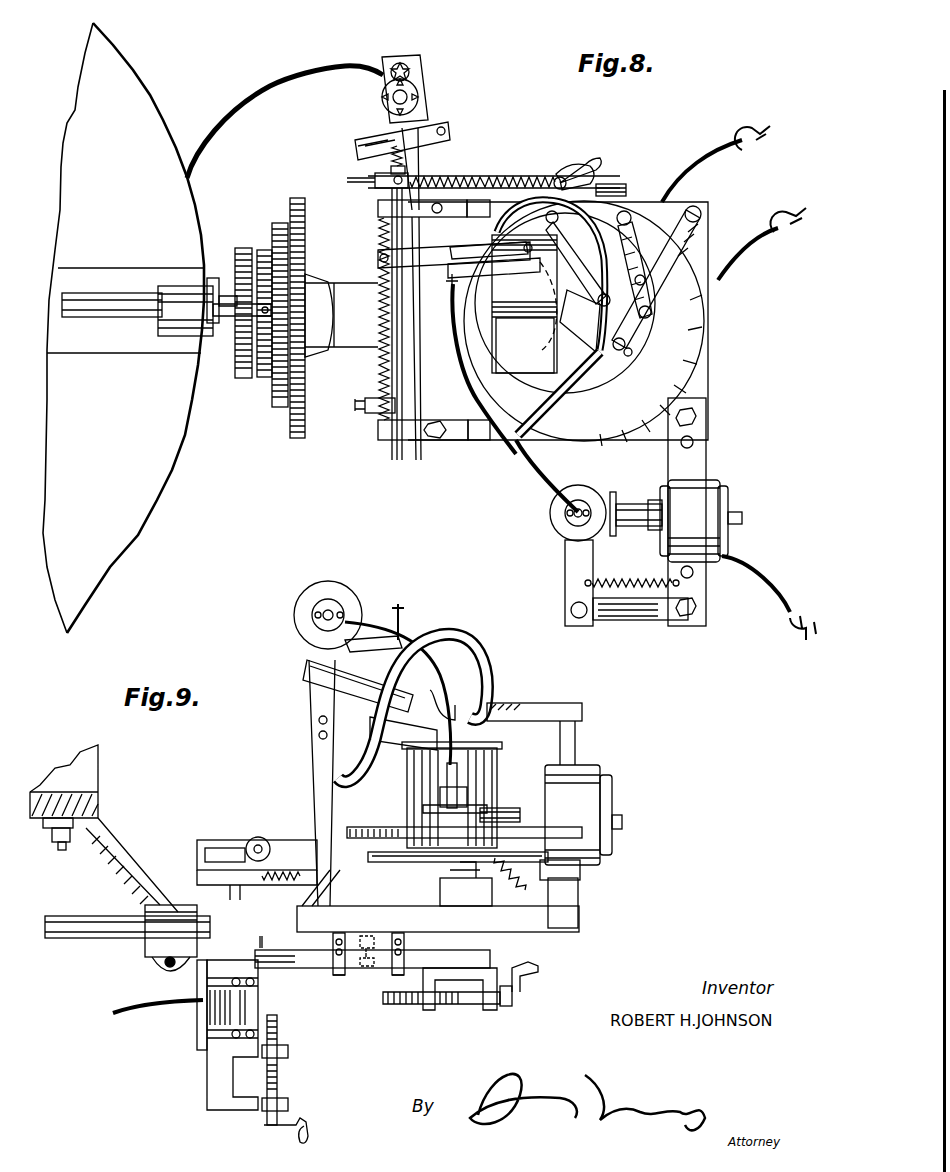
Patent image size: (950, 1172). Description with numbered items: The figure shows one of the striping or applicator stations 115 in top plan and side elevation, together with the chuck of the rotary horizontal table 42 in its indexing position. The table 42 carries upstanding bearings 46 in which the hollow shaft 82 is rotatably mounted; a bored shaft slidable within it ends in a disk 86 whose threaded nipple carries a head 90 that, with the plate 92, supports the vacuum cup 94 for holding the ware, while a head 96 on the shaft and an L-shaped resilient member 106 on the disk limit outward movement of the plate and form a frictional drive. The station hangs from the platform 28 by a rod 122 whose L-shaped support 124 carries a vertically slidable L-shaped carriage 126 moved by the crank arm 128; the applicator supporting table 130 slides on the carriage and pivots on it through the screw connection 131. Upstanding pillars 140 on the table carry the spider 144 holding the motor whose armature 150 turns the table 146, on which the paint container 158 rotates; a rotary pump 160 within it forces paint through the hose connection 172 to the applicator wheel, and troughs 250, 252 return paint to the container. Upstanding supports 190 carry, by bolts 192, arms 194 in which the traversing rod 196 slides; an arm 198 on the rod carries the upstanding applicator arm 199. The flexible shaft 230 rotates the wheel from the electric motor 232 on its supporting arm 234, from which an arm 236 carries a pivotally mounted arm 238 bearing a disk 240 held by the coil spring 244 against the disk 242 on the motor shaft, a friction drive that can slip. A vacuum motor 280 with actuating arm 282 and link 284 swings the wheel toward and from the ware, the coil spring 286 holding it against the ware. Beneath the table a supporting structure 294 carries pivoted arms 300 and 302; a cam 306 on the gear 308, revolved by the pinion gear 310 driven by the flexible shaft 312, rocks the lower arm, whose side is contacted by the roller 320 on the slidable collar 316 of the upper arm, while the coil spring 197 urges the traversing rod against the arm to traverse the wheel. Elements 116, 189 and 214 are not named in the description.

In FIG. 9, the platform 28 is at (100, 803).
In FIG. 8, the rotary horizontal table 42 is at (122, 84).
In FIG. 8, the upstanding bearings 46 is at (162, 342).
In FIG. 8, the hollow shaft 82 is at (80, 290).
In FIG. 8, the disk 86 is at (262, 252).
In FIG. 8, the head 90 is at (280, 224).
In FIG. 8, the plate 92 is at (298, 198).
In FIG. 8, the vacuum cup 94 is at (316, 348).
In FIG. 8, the head 96 is at (240, 250).
In FIG. 8, the L-shaped resilient member 106 is at (220, 300).
In FIG. 9, the applicator station 115 is at (490, 768).
In FIG. 8, the disc 116 is at (596, 384).
In FIG. 9, the rod 122 is at (90, 930).
In FIG. 9, the L-shaped support 124 is at (212, 1068).
In FIG. 9, the L-shaped carriage 126 is at (295, 968).
In FIG. 9, the crank arm 128 is at (292, 1128).
In FIG. 8, the applicator supporting table 130 is at (692, 404).
In FIG. 9, the applicator supporting table 130 is at (482, 920).
In FIG. 9, the screw connection 131 is at (368, 934).
In FIG. 9, the upstanding pillars 140 is at (580, 906).
In FIG. 9, the spider 144 is at (510, 888).
In FIG. 9, the table 146 is at (350, 830).
In FIG. 9, the armature 150 is at (376, 864).
In FIG. 8, the paint container 158 is at (640, 300).
In FIG. 9, the paint container 158 is at (418, 782).
In FIG. 8, the rotary pump 160 is at (652, 340).
In FIG. 9, the hose connection 172 is at (488, 670).
In FIG. 8, the guide 189 is at (455, 258).
In FIG. 9, the upstanding supports 190 is at (318, 898).
In FIG. 8, the bolts 192 is at (440, 440).
In FIG. 9, the bolts 192 is at (524, 996).
In FIG. 8, the arms 194 is at (414, 440).
In FIG. 8, the traversing rod 196 is at (370, 404).
In FIG. 9, the traversing rod 196 is at (260, 840).
In FIG. 8, the coil spring 197 is at (378, 278).
In FIG. 9, the coil spring 197 is at (240, 840).
In FIG. 8, the arm 198 is at (400, 252).
In FIG. 9, the applicator arm 199 is at (320, 768).
In FIG. 8, the pulley 214 is at (455, 292).
In FIG. 9, the pulley 214 is at (308, 620).
In FIG. 8, the flexible shaft 230 is at (470, 372).
In FIG. 9, the flexible shaft 230 is at (448, 640).
In FIG. 8, the electric motor 232 is at (725, 546).
In FIG. 9, the electric motor 232 is at (580, 806).
In FIG. 8, the supporting arm 234 is at (692, 600).
In FIG. 9, the supporting arm 234 is at (582, 887).
In FIG. 8, the arm 236 is at (628, 620).
In FIG. 8, the pivotally mounted arm 238 is at (566, 552).
In FIG. 8, the disk 240 is at (566, 496).
In FIG. 9, the disk 240 is at (430, 810).
In FIG. 8, the disk 242 is at (620, 504).
In FIG. 9, the disk 242 is at (500, 806).
In FIG. 8, the coil spring 244 is at (640, 574).
In FIG. 9, the coil spring 244 is at (530, 886).
In FIG. 8, the trough 250 is at (525, 300).
In FIG. 9, the trough 250 is at (356, 684).
In FIG. 8, the stationary trough 252 is at (520, 366).
In FIG. 9, the stationary trough 252 is at (380, 724).
In FIG. 8, the vacuum motor 280 is at (612, 190).
In FIG. 8, the actuating arm 282 is at (572, 176).
In FIG. 8, the link 284 is at (532, 180).
In FIG. 8, the coil spring 286 is at (484, 180).
In FIG. 8, the supporting structure 294 is at (412, 212).
In FIG. 8, the arm 300 is at (378, 150).
In FIG. 8, the arm 302 is at (452, 128).
In FIG. 8, the cam 306 is at (420, 94).
In FIG. 8, the gear 308 is at (428, 110).
In FIG. 8, the pinion gear 310 is at (392, 70).
In FIG. 8, the flexible shaft 312 is at (252, 100).
In FIG. 9, the flexible shaft 312 is at (146, 1018).
In FIG. 8, the slidable collar 316 is at (412, 148).
In FIG. 8, the roller 320 is at (382, 188).